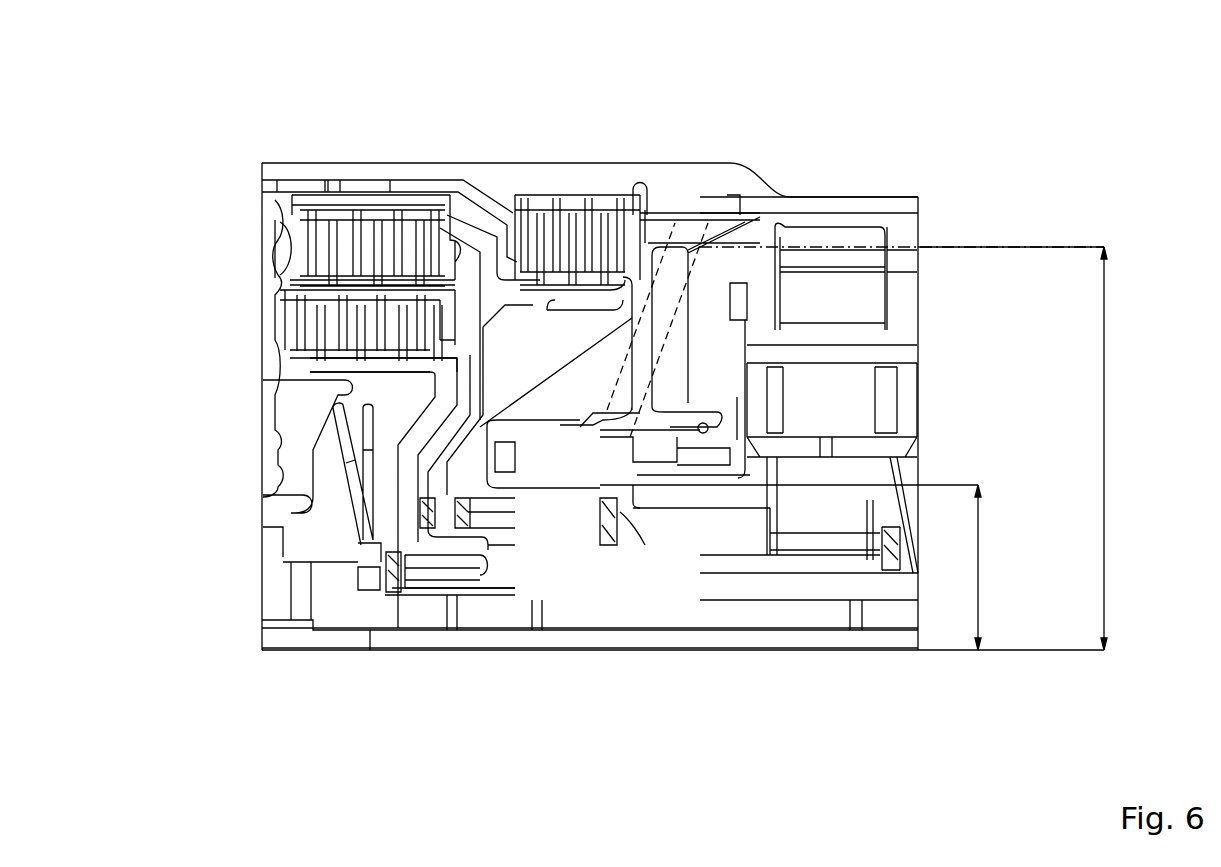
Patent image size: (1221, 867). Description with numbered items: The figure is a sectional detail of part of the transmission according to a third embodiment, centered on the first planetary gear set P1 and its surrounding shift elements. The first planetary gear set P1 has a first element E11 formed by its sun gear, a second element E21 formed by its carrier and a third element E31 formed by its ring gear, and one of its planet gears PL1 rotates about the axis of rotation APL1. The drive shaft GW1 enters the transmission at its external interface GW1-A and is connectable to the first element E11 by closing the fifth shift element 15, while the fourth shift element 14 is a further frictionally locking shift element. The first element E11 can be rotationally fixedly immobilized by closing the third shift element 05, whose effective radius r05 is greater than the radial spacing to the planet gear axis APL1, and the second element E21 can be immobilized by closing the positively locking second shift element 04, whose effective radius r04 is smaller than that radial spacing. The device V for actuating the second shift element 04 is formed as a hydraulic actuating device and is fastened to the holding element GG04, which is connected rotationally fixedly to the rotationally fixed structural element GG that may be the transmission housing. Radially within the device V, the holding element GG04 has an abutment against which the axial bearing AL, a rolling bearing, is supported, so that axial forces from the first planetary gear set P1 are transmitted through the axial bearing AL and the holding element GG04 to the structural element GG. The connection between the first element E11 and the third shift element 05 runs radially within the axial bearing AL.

The fifth shift element 15 is at (250, 242).
The fourth shift element 14 is at (250, 323).
The rotationally fixed structural element GG is at (488, 182).
The third shift element 05 is at (576, 180).
The holding element GG04 is at (657, 245).
The planet gear PL1 is at (813, 297).
The second element of the first planetary gear set E21 is at (853, 357).
The third element of the first planetary gear set E31 is at (858, 237).
The axis of rotation of the planet gear APL1 is at (962, 400).
The effective radius of the second shift element r04 is at (790, 567).
The effective radius of the third shift element r05 is at (1012, 448).
The drive shaft GW1 is at (780, 617).
The first element of the first planetary gear set E11 is at (862, 563).
The first planetary gear set P1 is at (827, 652).
The second shift element 04 is at (640, 497).
The axial bearing AL is at (617, 555).
The device for actuating the second shift element V is at (582, 505).
The external interface of the drive shaft GW1-A is at (480, 650).